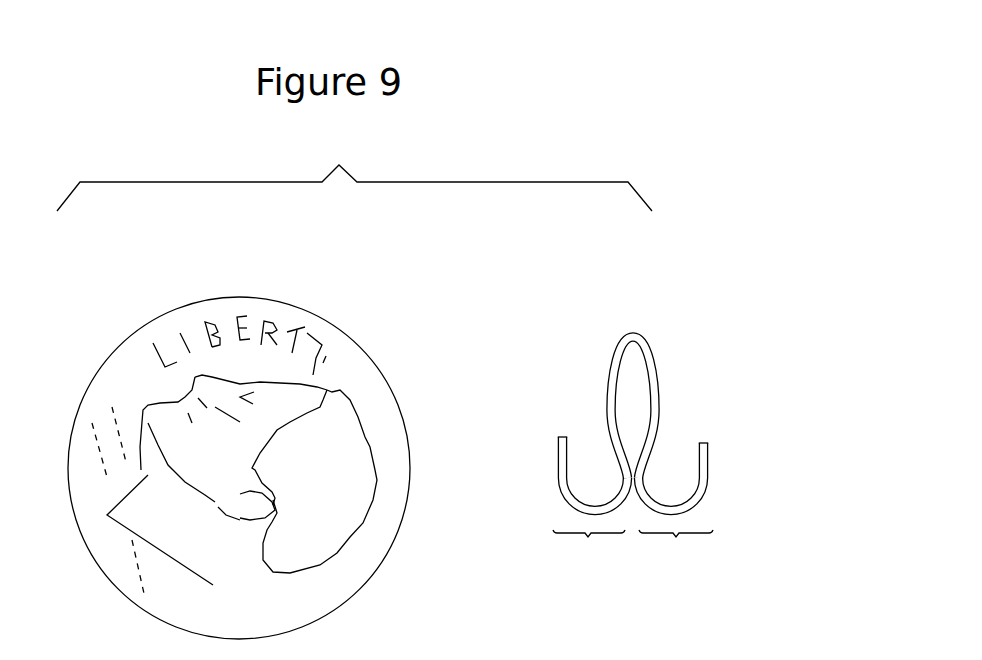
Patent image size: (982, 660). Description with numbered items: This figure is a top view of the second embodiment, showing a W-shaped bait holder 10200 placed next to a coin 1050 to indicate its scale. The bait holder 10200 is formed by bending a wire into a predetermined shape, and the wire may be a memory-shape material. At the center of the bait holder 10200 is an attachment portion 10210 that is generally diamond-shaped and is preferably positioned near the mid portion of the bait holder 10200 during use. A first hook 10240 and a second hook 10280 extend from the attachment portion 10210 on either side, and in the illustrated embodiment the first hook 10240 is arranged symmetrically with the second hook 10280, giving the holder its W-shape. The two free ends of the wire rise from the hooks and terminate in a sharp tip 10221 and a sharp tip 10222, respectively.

The coin (quarter) 1050 is at (165, 296).
The bait holder 10200 is at (642, 407).
The attachment portion 10210 is at (670, 358).
The sharp tip 10221 is at (563, 436).
The sharp tip 10222 is at (704, 442).
The first hook 10240 is at (586, 533).
The second hook 10280 is at (680, 533).